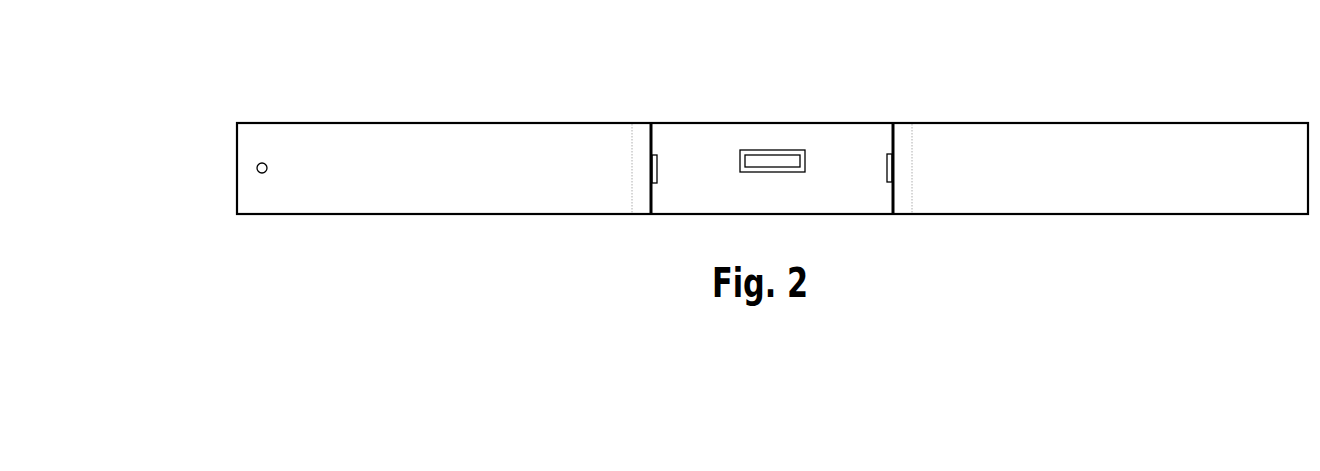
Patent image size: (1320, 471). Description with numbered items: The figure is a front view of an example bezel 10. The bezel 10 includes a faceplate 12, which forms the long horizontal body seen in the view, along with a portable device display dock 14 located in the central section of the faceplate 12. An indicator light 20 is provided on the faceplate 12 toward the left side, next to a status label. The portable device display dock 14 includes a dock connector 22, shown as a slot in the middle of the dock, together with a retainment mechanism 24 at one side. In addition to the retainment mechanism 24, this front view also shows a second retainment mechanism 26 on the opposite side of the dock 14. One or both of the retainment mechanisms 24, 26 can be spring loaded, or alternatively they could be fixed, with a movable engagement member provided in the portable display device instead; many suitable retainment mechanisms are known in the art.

The bezel 10 is at (300, 313).
The faceplate 12 is at (1048, 187).
The portable device display dock 14 is at (795, 139).
The indicator light 20 is at (264, 163).
The dock connector 22 is at (765, 172).
The retainment mechanism 24 is at (887, 173).
The retainment mechanism 26 is at (657, 173).